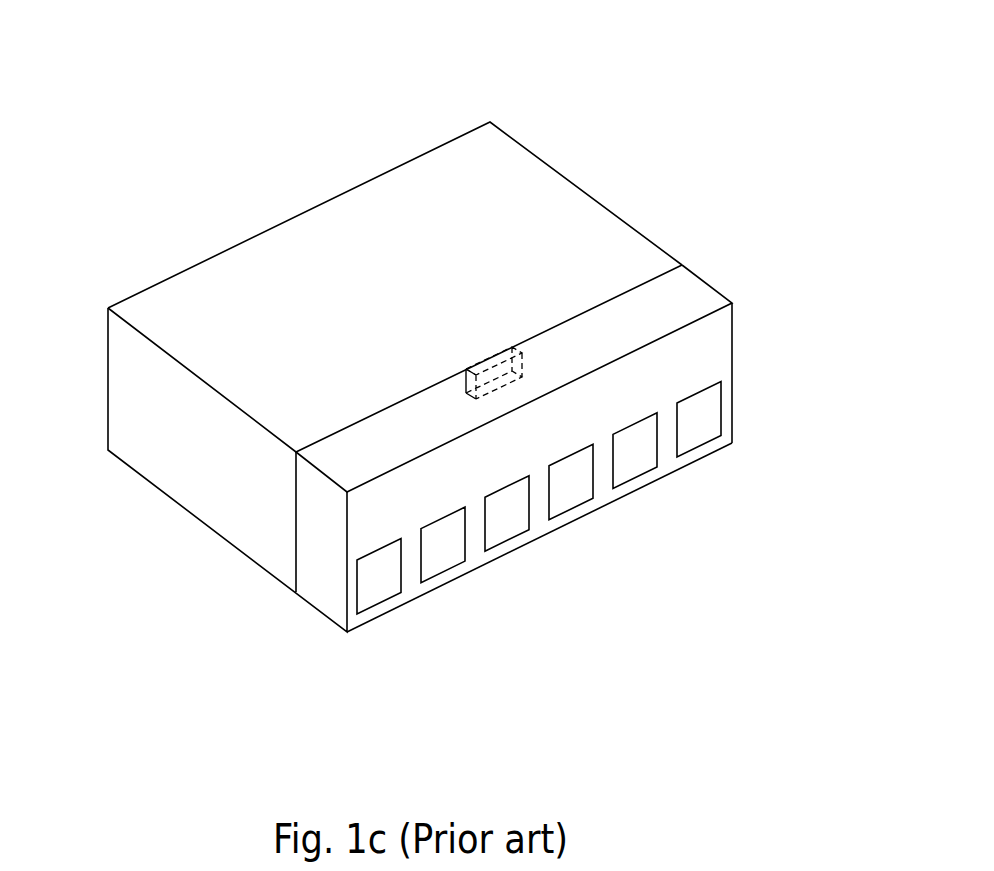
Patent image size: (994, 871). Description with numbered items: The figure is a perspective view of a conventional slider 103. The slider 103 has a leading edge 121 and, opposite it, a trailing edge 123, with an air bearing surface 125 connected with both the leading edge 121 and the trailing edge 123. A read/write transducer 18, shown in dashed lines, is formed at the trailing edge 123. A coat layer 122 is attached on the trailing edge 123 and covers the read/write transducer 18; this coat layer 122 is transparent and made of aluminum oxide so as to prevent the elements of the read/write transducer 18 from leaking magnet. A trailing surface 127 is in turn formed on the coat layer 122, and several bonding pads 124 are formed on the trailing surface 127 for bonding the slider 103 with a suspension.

The slider 103 is at (152, 40).
The leading edge 121 is at (90, 377).
The air bearing surface 125 is at (171, 303).
The coat layer 122 is at (692, 287).
The trailing surface 127 is at (717, 342).
The trailing edge 123 is at (762, 364).
The bonding pads 124 is at (697, 423).
The read/write transducer 18 is at (521, 362).